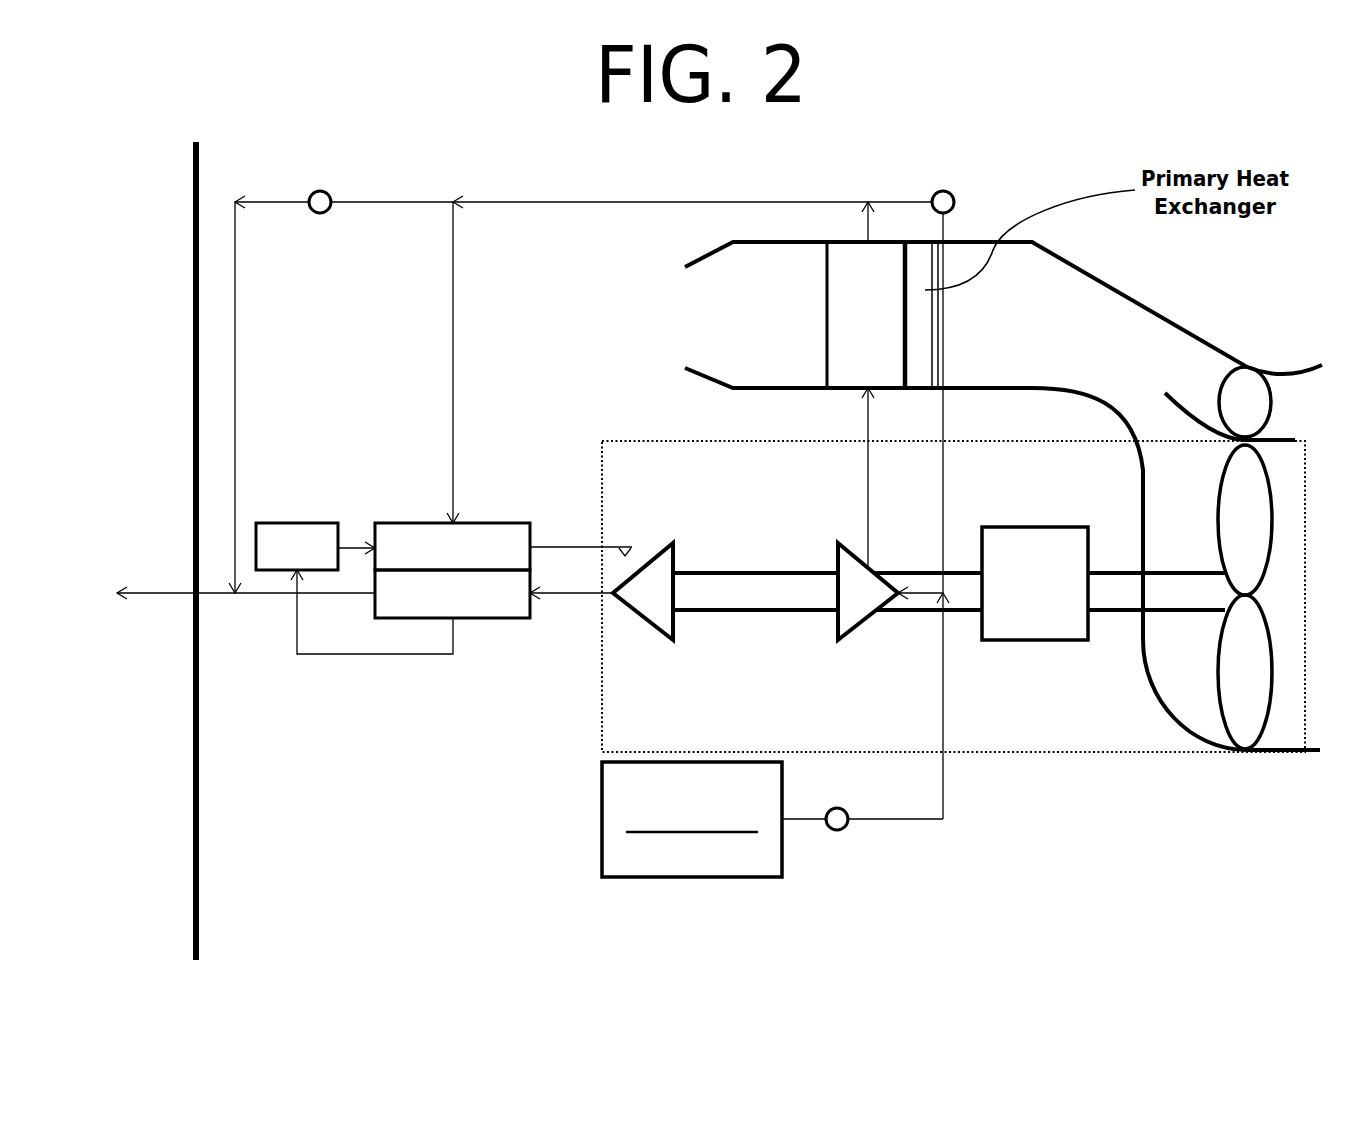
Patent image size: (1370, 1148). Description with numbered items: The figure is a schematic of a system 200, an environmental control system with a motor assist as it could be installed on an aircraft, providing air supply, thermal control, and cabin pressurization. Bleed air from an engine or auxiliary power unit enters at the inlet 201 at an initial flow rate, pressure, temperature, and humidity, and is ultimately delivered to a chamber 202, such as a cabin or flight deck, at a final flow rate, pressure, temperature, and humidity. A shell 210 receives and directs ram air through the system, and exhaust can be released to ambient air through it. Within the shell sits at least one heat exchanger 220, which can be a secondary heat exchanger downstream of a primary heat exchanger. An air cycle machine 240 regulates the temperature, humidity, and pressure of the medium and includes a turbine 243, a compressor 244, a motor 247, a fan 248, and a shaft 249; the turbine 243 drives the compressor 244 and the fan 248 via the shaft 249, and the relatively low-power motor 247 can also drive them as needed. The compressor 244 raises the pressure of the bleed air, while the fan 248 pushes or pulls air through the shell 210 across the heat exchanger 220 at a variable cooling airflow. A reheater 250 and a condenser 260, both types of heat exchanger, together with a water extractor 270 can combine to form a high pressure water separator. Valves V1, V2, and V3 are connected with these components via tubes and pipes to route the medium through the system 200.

The system 200 is at (1227, 131).
The inlet 201 is at (692, 819).
The chamber 202 is at (195, 142).
The shell 210 is at (1095, 278).
The heat exchanger 220 is at (842, 329).
The air cycle machine 240 is at (1127, 752).
The turbine 243 is at (632, 606).
The compressor 244 is at (840, 606).
The motor 247 is at (1014, 598).
The fan 248 is at (1190, 656).
The shaft 249 is at (738, 613).
The reheater 250 is at (431, 561).
The condenser 260 is at (431, 609).
The water extractor 270 is at (276, 560).
The valve V1 is at (832, 808).
The valve V2 is at (954, 192).
The valve V3 is at (331, 190).